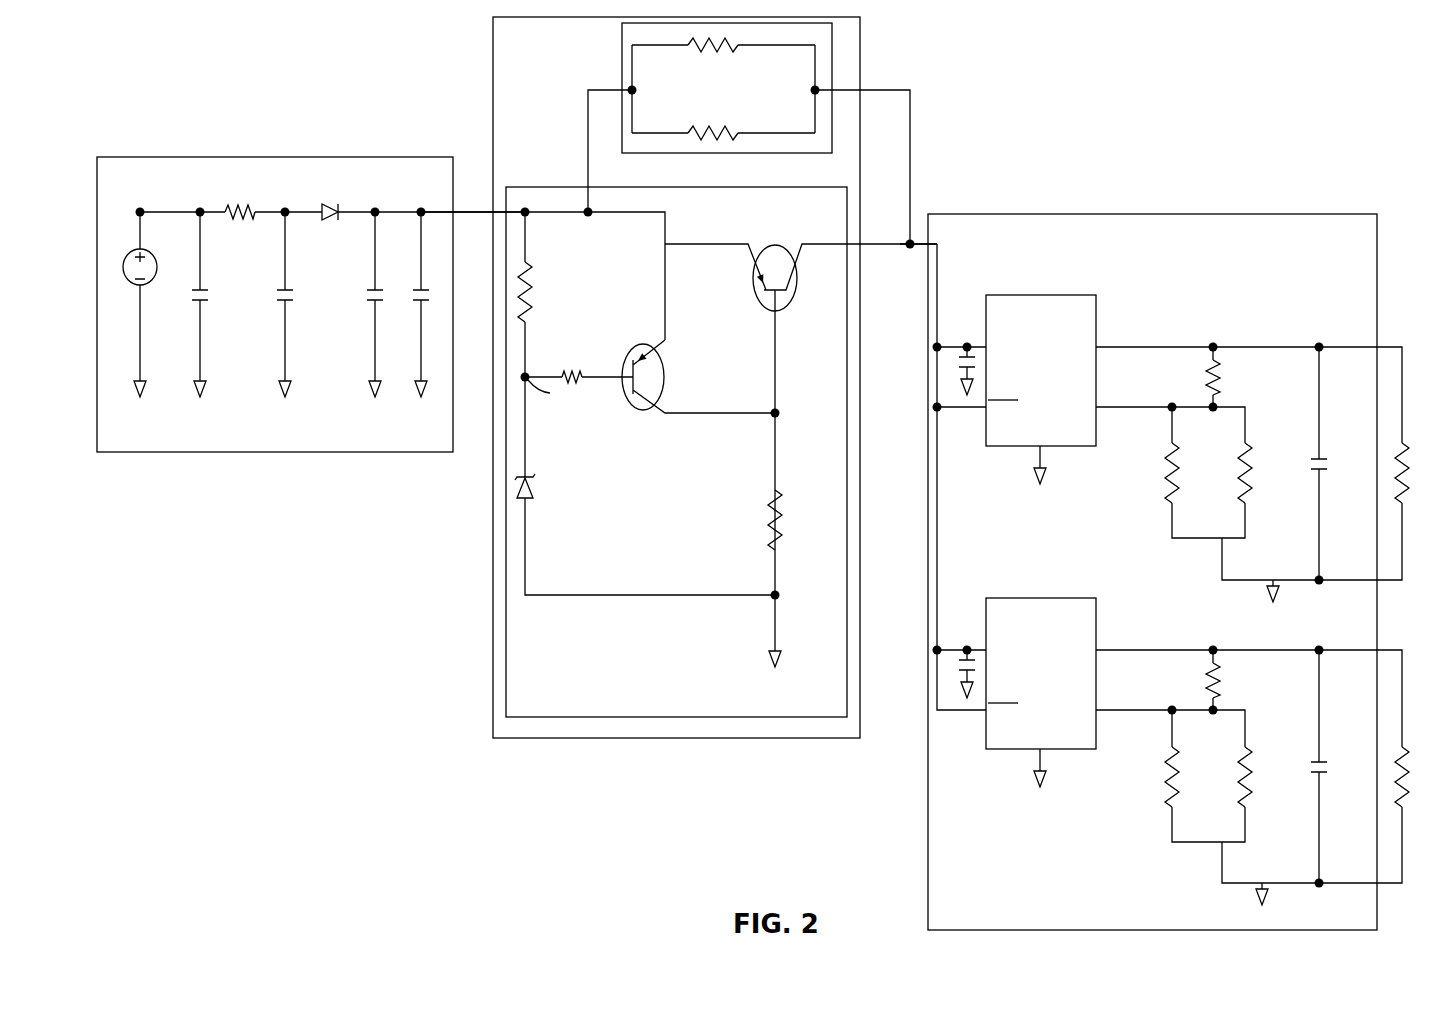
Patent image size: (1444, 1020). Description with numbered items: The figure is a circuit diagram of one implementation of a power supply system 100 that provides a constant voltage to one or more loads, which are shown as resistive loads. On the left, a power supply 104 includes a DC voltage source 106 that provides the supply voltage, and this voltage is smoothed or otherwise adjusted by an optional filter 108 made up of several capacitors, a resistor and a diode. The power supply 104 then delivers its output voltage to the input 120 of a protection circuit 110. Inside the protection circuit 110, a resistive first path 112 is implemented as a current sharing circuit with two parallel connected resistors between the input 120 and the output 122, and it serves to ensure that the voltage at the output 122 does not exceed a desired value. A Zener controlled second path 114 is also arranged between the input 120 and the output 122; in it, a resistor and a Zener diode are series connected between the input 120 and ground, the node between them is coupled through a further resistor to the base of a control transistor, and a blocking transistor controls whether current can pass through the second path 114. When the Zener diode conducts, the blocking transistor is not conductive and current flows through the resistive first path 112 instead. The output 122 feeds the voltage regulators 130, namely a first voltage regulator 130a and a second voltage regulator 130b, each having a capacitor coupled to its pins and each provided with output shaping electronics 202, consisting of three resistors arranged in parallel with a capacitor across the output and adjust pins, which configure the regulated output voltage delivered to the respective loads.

The system 100 is at (303, 669).
The power supply 104 is at (190, 157).
The DC voltage source 106 is at (137, 287).
The filter 108 is at (436, 403).
The protection circuit 110 is at (740, 738).
The resistive first path 112 is at (622, 37).
The second path 114 is at (590, 717).
The input 120 is at (483, 214).
The output 122 is at (908, 247).
The voltage regulators 130 is at (1310, 214).
The first voltage regulator 130a is at (1096, 317).
The second voltage regulator 130b is at (1096, 620).
The output shaping electronics 202 is at (1270, 321).